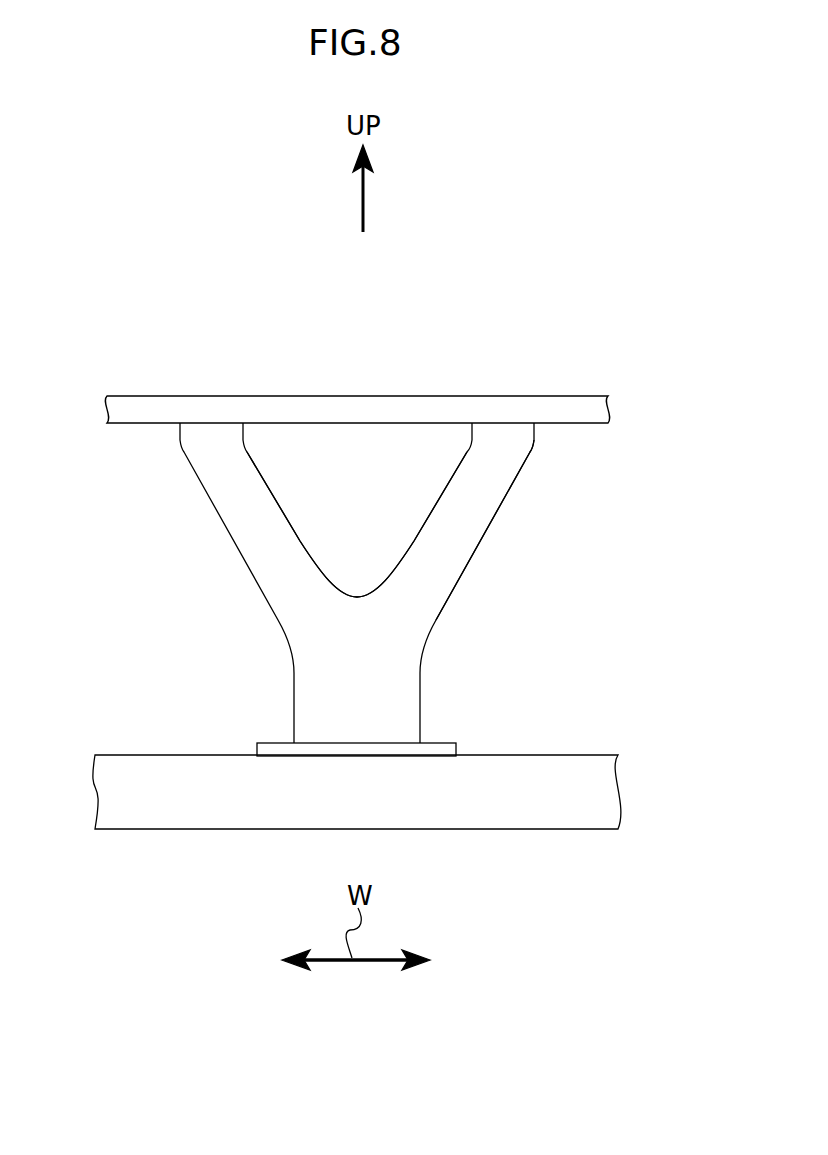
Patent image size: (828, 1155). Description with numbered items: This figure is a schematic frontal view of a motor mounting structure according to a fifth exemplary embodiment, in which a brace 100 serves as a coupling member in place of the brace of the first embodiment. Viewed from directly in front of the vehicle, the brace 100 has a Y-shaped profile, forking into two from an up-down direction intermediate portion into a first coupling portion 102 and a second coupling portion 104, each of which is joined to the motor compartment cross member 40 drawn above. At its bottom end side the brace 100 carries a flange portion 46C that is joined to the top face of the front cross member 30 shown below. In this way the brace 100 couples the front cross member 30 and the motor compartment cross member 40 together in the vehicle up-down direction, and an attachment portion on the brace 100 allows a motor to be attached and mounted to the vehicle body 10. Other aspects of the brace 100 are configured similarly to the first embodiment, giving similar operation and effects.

The vehicle body 10 is at (525, 275).
The motor compartment cross member 40 is at (362, 385).
The brace 100 is at (560, 567).
The first coupling portion 102 is at (262, 497).
The second coupling portion 104 is at (513, 466).
The flange portion 46C is at (442, 741).
The front cross member 30 is at (553, 742).